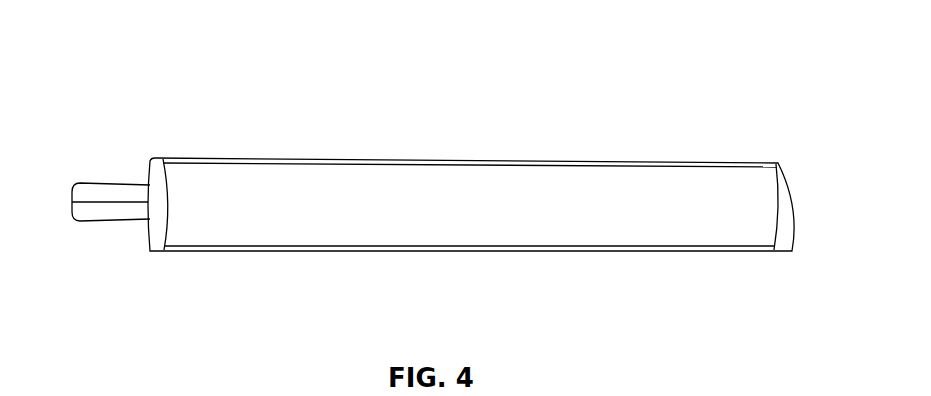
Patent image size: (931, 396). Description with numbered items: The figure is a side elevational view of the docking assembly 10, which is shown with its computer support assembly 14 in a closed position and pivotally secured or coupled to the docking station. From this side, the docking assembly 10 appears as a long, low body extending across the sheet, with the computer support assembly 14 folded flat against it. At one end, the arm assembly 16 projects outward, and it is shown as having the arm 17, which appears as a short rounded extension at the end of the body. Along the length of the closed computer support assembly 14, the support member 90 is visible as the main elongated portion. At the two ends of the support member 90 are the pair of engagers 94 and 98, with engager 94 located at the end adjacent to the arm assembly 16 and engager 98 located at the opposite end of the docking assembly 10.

The docking assembly 10 is at (116, 90).
The computer support assembly 14 is at (633, 261).
The arm assembly 16 is at (113, 172).
The arm 17 is at (90, 223).
The support member 90 is at (296, 237).
The engager 94 is at (151, 229).
The engager 98 is at (786, 207).